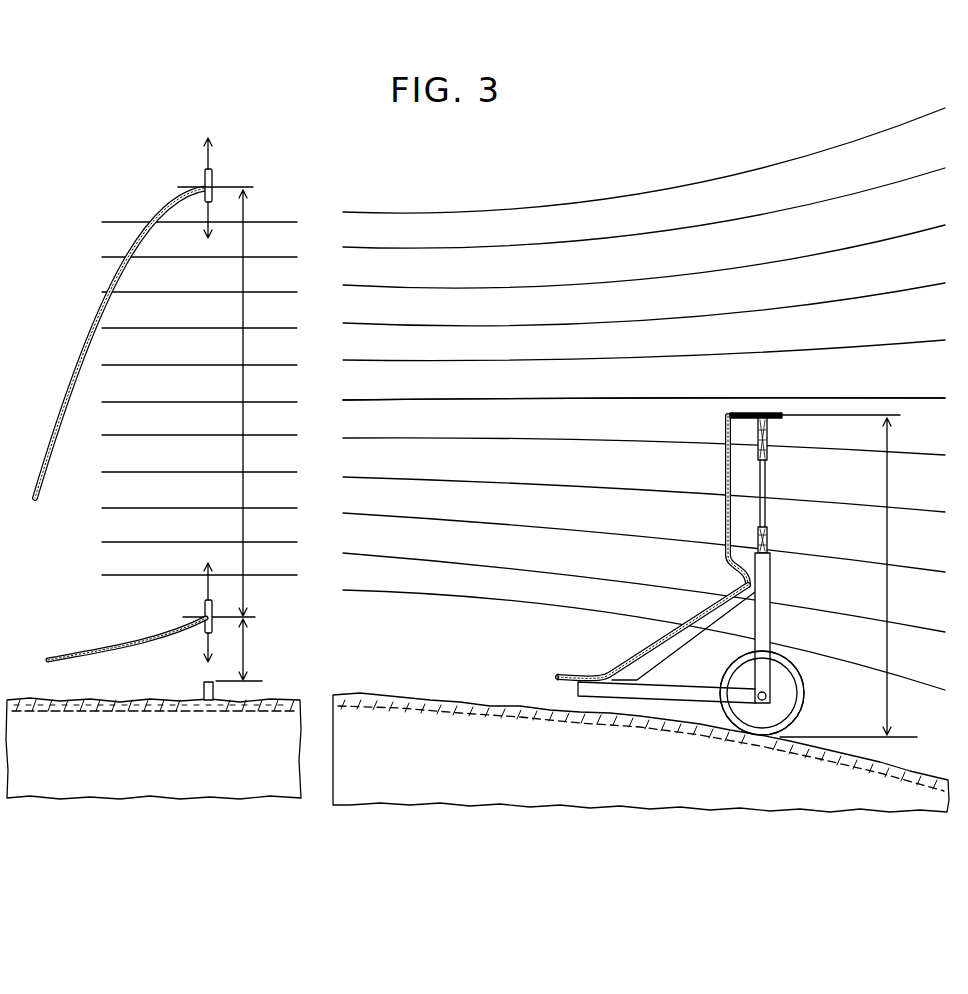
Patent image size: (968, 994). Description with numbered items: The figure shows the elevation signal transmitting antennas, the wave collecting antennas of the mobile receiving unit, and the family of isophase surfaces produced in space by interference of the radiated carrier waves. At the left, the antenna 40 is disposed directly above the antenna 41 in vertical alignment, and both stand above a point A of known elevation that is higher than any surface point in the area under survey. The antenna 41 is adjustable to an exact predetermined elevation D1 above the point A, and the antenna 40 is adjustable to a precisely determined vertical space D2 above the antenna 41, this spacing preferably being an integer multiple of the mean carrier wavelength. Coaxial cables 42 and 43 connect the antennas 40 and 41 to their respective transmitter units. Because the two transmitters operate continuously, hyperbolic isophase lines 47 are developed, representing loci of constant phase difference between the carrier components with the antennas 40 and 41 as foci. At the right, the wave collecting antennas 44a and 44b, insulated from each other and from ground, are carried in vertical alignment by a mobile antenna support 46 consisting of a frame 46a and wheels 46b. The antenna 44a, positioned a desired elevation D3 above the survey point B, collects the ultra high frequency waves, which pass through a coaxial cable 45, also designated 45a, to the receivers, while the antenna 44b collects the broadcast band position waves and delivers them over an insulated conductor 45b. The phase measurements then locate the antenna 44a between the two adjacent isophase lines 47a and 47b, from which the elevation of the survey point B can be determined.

The antenna 40 is at (215, 182).
The antenna 41 is at (205, 628).
The coaxial cable 42 is at (172, 198).
The coaxial cable 43 is at (112, 652).
The wave collecting antenna 44a is at (780, 418).
The wave collecting antenna 44b is at (768, 511).
The coaxial cable 45 is at (702, 612).
The coaxial cable 45a is at (725, 421).
The insulated conductor 45b is at (759, 496).
The mobile antenna support 46 is at (709, 664).
The frame 46a is at (771, 620).
The wheels 46b is at (772, 731).
The hyperbolic isophase lines 47 is at (598, 317).
The isophase line 47a is at (387, 440).
The isophase line 47b is at (387, 400).
The point of known elevation A is at (202, 702).
The survey point B is at (716, 735).
The elevation D1 is at (239, 650).
The vertical space D2 is at (222, 403).
The elevation D3 is at (848, 576).